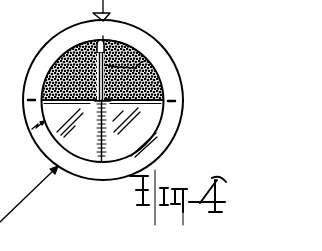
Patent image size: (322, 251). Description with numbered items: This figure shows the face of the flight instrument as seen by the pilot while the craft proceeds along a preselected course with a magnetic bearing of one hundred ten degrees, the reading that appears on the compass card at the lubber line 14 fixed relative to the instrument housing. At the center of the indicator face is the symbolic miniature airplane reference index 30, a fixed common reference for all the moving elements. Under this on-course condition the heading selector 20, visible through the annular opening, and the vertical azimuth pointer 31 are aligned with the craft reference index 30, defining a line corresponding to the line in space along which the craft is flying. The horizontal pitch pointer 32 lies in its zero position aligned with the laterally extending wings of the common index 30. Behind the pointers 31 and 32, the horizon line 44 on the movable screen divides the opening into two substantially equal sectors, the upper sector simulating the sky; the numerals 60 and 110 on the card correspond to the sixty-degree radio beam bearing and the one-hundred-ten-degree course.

The lubber line 14 is at (109, 16).
The heading selector member 20 is at (131, 37).
The symbolic miniature airplane reference index 30 is at (116, 99).
The azimuth pointer 31 is at (143, 62).
The pitch pointer 32 is at (160, 104).
The horizon line 44 is at (58, 110).
The scale marking 60 is at (43, 88).
The pointer 110 is at (102, 94).